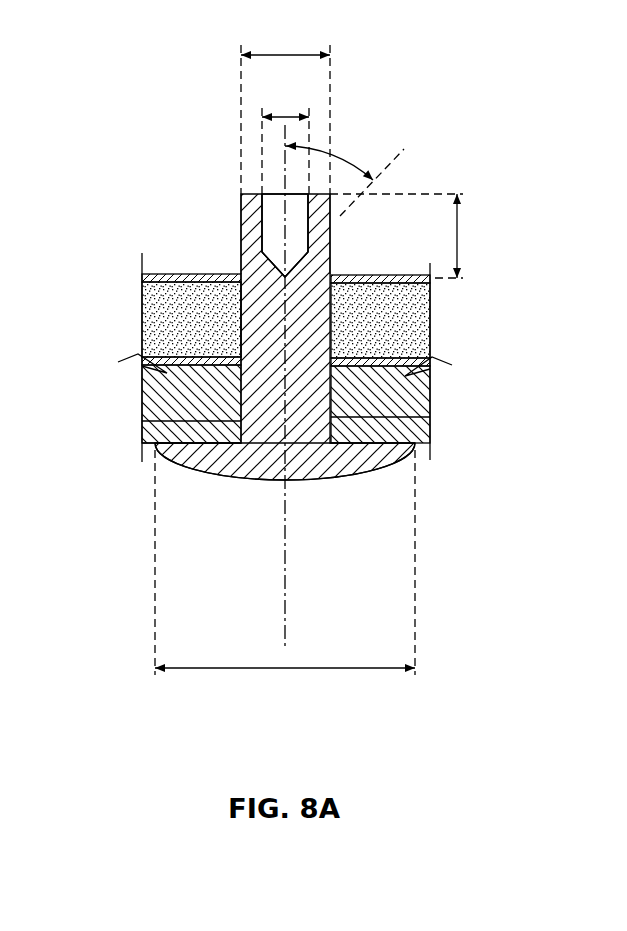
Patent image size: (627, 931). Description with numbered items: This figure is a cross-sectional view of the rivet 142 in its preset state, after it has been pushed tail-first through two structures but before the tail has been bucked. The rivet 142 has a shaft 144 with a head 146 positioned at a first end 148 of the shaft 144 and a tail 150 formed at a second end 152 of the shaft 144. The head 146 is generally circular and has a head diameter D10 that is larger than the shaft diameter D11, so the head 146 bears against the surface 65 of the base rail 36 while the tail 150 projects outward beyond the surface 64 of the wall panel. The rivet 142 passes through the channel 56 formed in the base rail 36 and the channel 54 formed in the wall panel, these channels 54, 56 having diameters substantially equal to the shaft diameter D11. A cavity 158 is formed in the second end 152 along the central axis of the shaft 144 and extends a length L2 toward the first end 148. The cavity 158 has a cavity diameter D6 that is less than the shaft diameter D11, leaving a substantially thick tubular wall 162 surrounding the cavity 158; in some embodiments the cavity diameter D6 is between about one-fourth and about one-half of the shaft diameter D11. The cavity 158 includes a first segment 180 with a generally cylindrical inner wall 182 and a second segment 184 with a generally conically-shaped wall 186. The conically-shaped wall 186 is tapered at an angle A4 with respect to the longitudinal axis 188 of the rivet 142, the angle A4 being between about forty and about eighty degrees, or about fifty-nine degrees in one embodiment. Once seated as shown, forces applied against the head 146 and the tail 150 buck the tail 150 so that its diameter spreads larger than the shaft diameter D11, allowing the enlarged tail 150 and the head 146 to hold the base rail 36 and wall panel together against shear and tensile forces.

The base rail 36 is at (216, 433).
The channel 54 is at (336, 334).
The channel 56 is at (340, 413).
The surface of the second structure 64 is at (142, 246).
The surface of the first structure 65 is at (420, 447).
The rivet 142 is at (338, 486).
The shaft 144 is at (250, 318).
The head 146 is at (246, 482).
The first end 148 is at (237, 421).
The tail 150 is at (250, 193).
The second end 152 is at (240, 220).
The cavity 158 is at (277, 210).
The tubular wall 162 is at (318, 216).
The first segment 180 is at (310, 247).
The cylindrical inner wall 182 is at (266, 235).
The second segment 184 is at (302, 274).
The conically-shaped wall 186 is at (316, 237).
The longitudinal axis 188 is at (285, 570).
The shaft diameter D11 is at (285, 105).
The cavity diameter D6 is at (285, 135).
The head diameter D10 is at (285, 579).
The cavity length L2 is at (412, 236).
The taper angle A4 is at (344, 163).